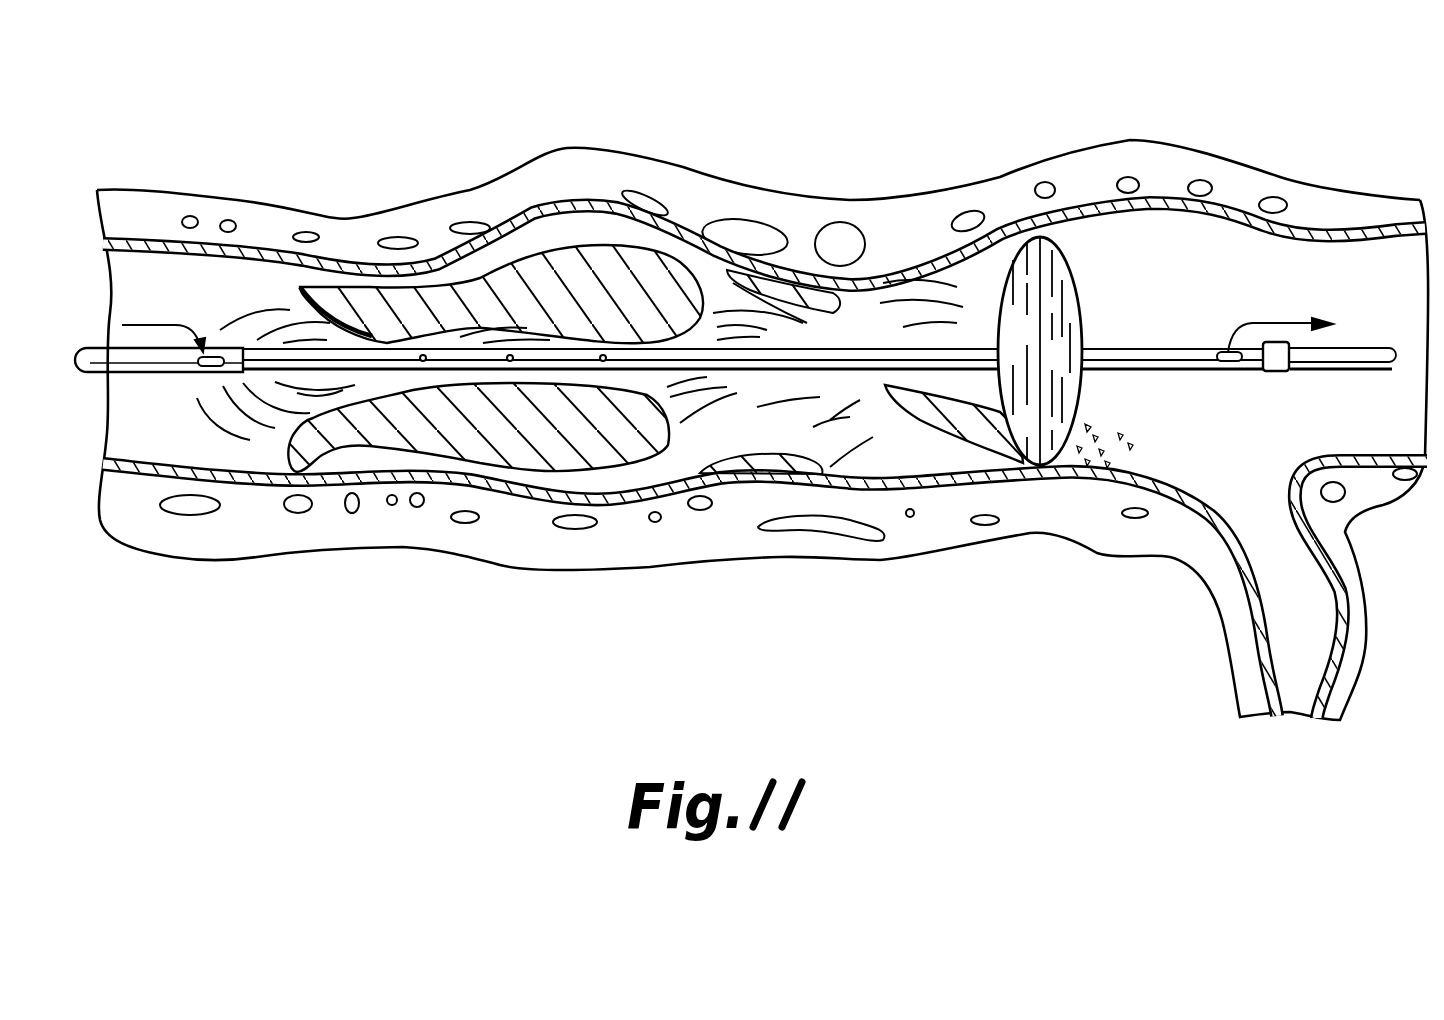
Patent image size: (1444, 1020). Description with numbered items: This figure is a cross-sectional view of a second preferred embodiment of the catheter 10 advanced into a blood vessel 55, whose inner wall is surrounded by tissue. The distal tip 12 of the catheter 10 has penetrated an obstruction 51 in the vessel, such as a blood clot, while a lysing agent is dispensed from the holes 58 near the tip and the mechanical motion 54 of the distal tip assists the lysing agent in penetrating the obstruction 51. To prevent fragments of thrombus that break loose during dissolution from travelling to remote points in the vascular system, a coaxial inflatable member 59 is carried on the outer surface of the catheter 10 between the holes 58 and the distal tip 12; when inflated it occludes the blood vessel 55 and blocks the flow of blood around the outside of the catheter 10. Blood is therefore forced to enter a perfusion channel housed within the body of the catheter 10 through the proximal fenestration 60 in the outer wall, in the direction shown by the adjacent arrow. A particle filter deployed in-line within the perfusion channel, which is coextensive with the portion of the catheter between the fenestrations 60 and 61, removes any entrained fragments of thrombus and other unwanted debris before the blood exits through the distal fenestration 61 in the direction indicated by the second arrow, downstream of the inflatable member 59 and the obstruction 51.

The catheter 10 is at (735, 217).
The distal tip 12 is at (1389, 340).
The obstruction 51 is at (918, 420).
The mechanical motion of the tip 54 is at (270, 420).
The blood vessel 55 is at (367, 650).
The holes 58 is at (510, 355).
The coaxial inflatable member 59 is at (1060, 278).
The proximal fenestration 60 is at (210, 355).
The distal fenestration 61 is at (1226, 348).